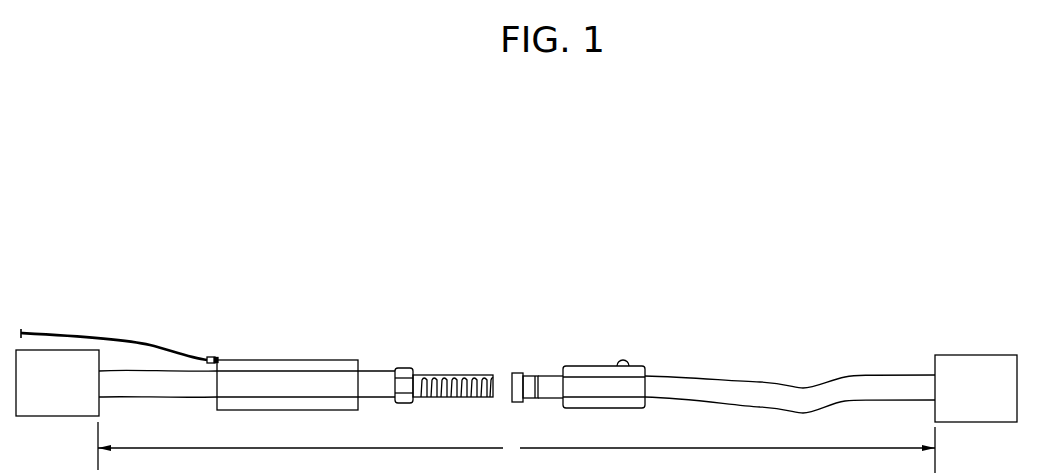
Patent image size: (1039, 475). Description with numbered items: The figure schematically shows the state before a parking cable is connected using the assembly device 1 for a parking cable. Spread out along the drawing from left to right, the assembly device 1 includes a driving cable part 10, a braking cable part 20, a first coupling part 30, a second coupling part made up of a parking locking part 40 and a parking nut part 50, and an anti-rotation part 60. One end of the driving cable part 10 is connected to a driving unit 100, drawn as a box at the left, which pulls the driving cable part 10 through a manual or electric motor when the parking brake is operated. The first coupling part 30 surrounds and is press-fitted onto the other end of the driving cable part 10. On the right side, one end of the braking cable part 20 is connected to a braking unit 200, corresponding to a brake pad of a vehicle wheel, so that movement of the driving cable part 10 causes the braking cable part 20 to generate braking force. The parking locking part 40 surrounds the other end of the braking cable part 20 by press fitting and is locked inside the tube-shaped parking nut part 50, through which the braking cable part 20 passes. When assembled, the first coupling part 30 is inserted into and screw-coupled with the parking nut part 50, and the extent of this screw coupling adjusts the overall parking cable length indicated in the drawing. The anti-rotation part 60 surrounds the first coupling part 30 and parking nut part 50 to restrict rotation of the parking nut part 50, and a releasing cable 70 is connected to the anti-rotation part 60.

The assembly device 1 is at (869, 211).
The driving cable part 10 is at (163, 375).
The braking cable part 20 is at (740, 385).
The first coupling part 30 is at (405, 366).
The parking locking part 40 is at (514, 371).
The parking nut part 50 is at (598, 372).
The anti-rotation part 60 is at (292, 358).
The releasing cable 70 is at (125, 341).
The driving unit 100 is at (57, 349).
The braking unit 200 is at (973, 354).